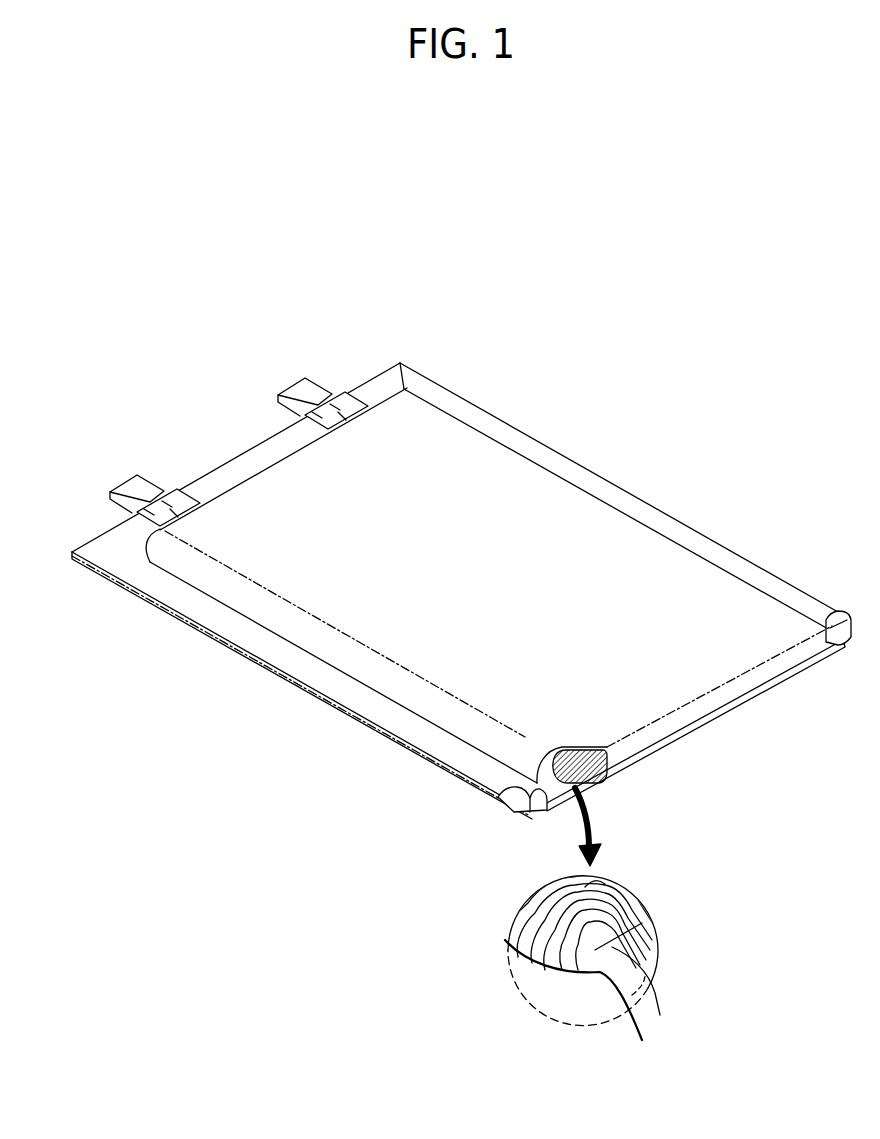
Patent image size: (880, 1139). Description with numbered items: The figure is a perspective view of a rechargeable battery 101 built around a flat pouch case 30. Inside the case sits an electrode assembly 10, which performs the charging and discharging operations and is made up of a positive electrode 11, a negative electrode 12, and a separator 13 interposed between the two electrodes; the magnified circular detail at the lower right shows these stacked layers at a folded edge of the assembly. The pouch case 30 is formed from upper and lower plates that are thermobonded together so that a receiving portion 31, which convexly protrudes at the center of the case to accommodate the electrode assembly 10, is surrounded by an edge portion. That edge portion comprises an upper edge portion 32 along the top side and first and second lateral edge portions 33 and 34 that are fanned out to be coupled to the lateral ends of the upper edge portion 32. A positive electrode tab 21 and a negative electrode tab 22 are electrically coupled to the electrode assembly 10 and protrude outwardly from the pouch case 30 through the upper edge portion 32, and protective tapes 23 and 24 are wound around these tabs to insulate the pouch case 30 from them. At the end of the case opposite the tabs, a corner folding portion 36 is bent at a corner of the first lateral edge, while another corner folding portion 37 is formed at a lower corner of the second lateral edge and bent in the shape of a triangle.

The rechargeable battery 101 is at (202, 336).
The electrode assembly 10 is at (728, 972).
The positive electrode 11 is at (642, 1032).
The negative electrode 12 is at (640, 948).
The separator 13 is at (660, 1005).
The positive electrode tab 21 is at (133, 487).
The negative electrode tab 22 is at (300, 392).
The protective tape 23 is at (158, 500).
The protective tape 24 is at (325, 408).
The pouch case 30 is at (461, 583).
The receiving portion 31 is at (672, 565).
The upper edge portion 32 is at (240, 468).
The first lateral edge portion 33 is at (290, 660).
The second lateral edge portion 34 is at (593, 478).
The corner folding portion 36 is at (492, 795).
The corner folding portion 37 is at (828, 611).